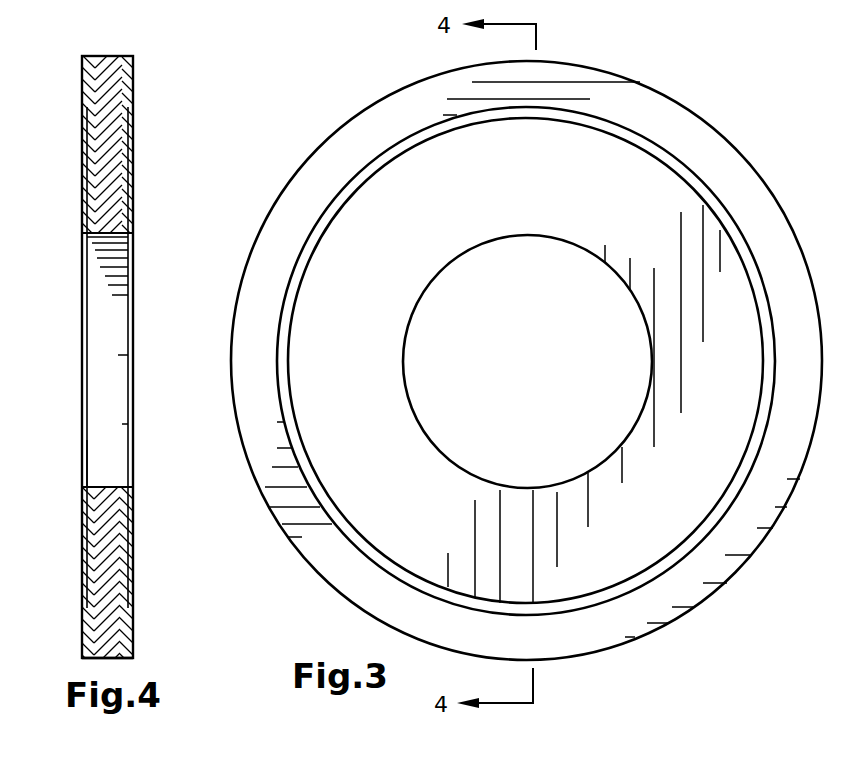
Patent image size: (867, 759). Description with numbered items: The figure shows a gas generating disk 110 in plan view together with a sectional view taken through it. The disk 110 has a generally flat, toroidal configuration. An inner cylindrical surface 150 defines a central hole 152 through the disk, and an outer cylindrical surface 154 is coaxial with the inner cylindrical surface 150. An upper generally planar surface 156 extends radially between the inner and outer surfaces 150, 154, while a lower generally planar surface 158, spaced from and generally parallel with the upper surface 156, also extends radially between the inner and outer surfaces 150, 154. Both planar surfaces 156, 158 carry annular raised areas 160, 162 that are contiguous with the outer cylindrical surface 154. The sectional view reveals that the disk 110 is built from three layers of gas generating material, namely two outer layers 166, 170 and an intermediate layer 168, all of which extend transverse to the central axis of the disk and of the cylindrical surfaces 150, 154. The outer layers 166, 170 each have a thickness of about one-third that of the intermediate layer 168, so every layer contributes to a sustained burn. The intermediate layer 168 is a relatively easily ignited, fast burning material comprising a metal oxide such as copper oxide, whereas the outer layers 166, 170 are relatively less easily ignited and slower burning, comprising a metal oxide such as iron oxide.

In FIG. 3, the gas generating disk 110 is at (672, 88).
In FIG. 4, the gas generating disk 110 is at (163, 135).
In FIG. 3, the inner cylindrical surface 150 is at (432, 279).
In FIG. 4, the inner cylindrical surface 150 is at (108, 482).
In FIG. 3, the central hole 152 is at (468, 393).
In FIG. 4, the central hole 152 is at (105, 392).
In FIG. 3, the outer cylindrical surface 154 is at (615, 648).
In FIG. 4, the outer cylindrical surface 154 is at (110, 660).
In FIG. 3, the upper generally planar surface 156 is at (395, 235).
In FIG. 4, the upper generally planar surface 156 is at (85, 560).
In FIG. 4, the lower generally planar surface 158 is at (127, 542).
In FIG. 3, the annular raised area 160 is at (347, 568).
In FIG. 4, the annular raised area 160 is at (128, 627).
In FIG. 4, the annular raised area 162 is at (82, 623).
In FIG. 4, the outer layer 166 is at (127, 157).
In FIG. 4, the intermediate layer 168 is at (107, 91).
In FIG. 4, the outer layer 170 is at (92, 128).